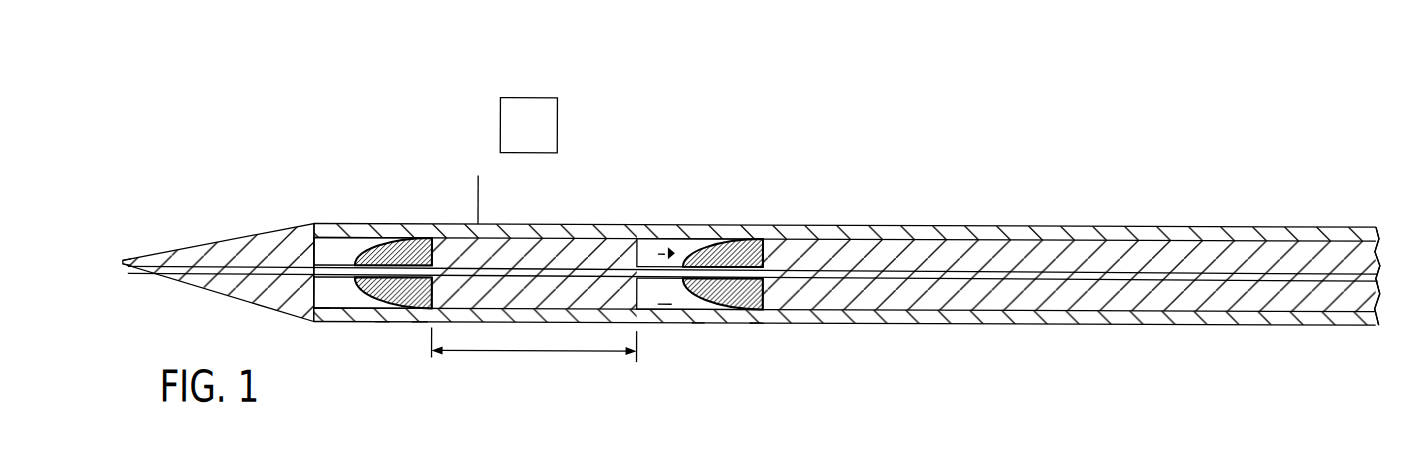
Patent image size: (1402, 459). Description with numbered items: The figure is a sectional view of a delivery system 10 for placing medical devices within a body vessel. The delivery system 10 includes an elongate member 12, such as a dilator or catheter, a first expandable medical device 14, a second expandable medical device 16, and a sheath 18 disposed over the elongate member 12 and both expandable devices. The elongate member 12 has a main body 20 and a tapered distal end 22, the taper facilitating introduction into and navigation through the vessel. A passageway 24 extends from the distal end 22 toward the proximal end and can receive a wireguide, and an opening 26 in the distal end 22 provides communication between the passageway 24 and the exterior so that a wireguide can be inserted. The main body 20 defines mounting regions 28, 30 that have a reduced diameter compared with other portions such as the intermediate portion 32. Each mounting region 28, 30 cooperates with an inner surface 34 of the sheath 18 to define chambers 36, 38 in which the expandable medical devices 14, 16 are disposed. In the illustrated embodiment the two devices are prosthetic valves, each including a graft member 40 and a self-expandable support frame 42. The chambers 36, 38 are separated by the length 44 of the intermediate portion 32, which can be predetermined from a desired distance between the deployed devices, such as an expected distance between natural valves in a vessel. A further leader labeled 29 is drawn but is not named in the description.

The delivery system 10 is at (413, 158).
The elongate member 12 is at (858, 224).
The first expandable medical device 14 is at (416, 324).
The second expandable medical device 16 is at (753, 328).
The sheath 18 is at (1237, 224).
The main body 20 is at (549, 267).
The tapered distal end 22 is at (238, 301).
The passageway 24 is at (478, 224).
The opening 26 is at (128, 260).
The first mounting region 28 is at (327, 322).
The core body 29 is at (563, 298).
The second mounting region 30 is at (647, 322).
The intermediate portion 32 is at (503, 224).
The inner surface 34 is at (335, 243).
The first chamber 36 is at (357, 246).
The second chamber 38 is at (672, 245).
The graft member 40 is at (431, 224).
The self-expandable support frame 42 is at (381, 322).
The length 44 is at (527, 353).